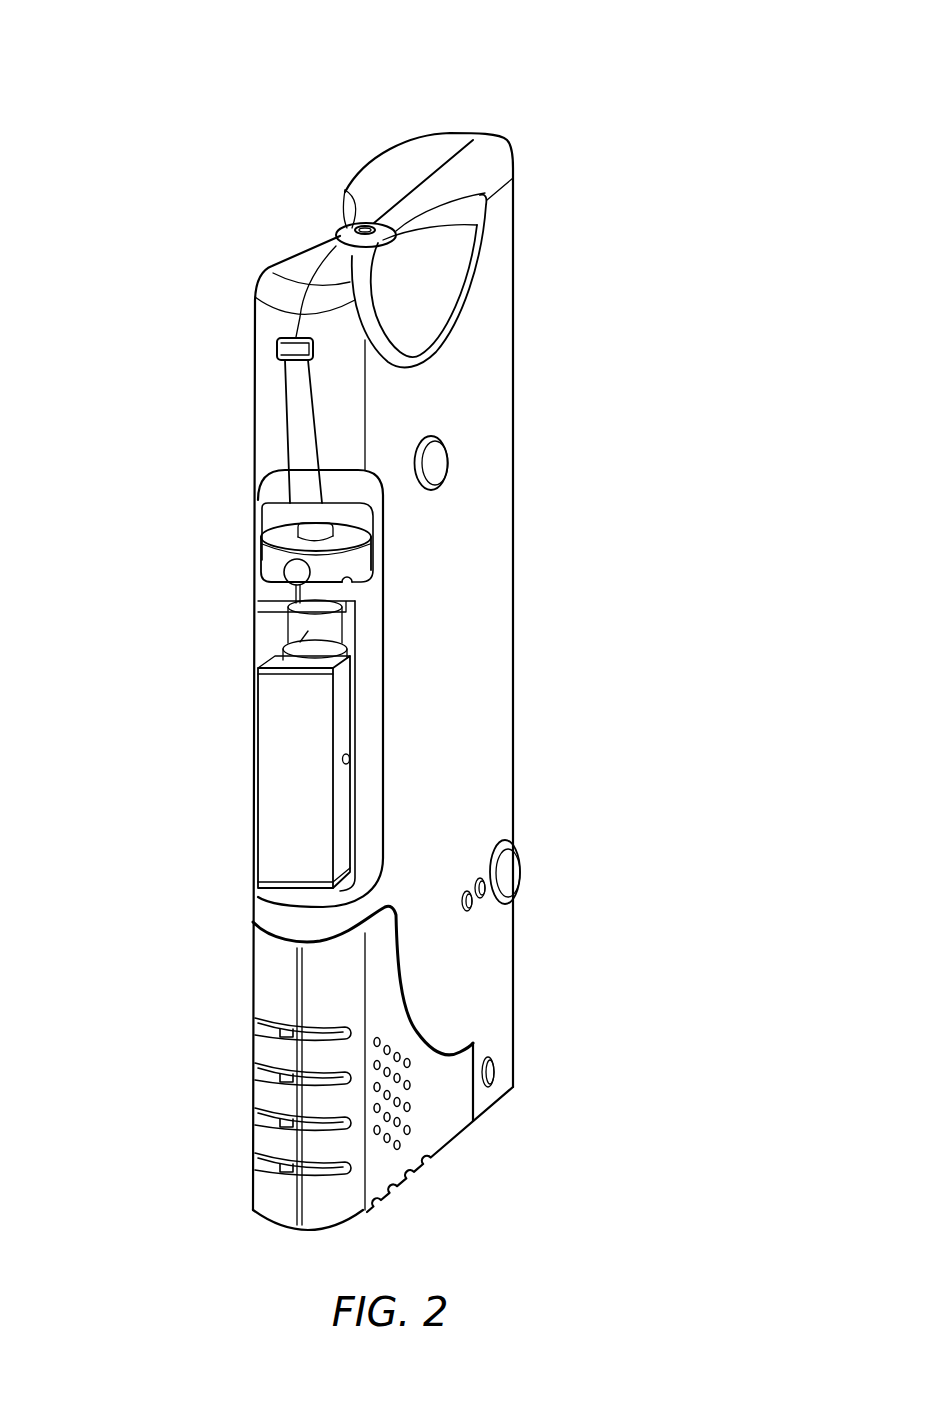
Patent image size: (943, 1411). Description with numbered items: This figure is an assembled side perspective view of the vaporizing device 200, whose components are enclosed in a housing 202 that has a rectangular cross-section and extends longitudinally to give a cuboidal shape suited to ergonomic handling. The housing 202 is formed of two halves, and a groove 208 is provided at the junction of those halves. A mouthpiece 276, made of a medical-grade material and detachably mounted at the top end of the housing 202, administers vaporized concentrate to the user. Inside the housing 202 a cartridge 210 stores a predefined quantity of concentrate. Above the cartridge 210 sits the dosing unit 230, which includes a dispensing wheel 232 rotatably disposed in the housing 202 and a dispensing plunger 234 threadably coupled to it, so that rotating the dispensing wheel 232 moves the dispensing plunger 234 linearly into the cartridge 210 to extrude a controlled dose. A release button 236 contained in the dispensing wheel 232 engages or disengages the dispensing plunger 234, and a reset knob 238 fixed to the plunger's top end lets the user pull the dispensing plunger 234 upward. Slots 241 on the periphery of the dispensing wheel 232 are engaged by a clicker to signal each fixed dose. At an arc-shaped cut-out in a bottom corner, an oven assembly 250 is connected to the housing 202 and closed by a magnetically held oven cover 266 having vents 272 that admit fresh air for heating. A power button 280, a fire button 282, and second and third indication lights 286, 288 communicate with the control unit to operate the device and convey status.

The vaporizing device 200 is at (576, 71).
The housing 202 is at (515, 286).
The mouthpiece 276 is at (346, 228).
The reset knob 238 is at (285, 355).
The dosing unit 230 is at (227, 486).
The dispensing wheel 232 is at (270, 561).
The release button 236 is at (288, 576).
The slot 241 is at (352, 584).
The groove 208 is at (273, 622).
The dispensing plunger 234 is at (262, 657).
The cartridge 210 is at (287, 738).
The fire button 282 is at (447, 464).
The power button 280 is at (513, 873).
The second indication light 286 is at (486, 897).
The third indication light 288 is at (471, 909).
The oven assembly 250 is at (212, 1159).
The oven cover 266 is at (273, 989).
The vents 272 is at (409, 1086).